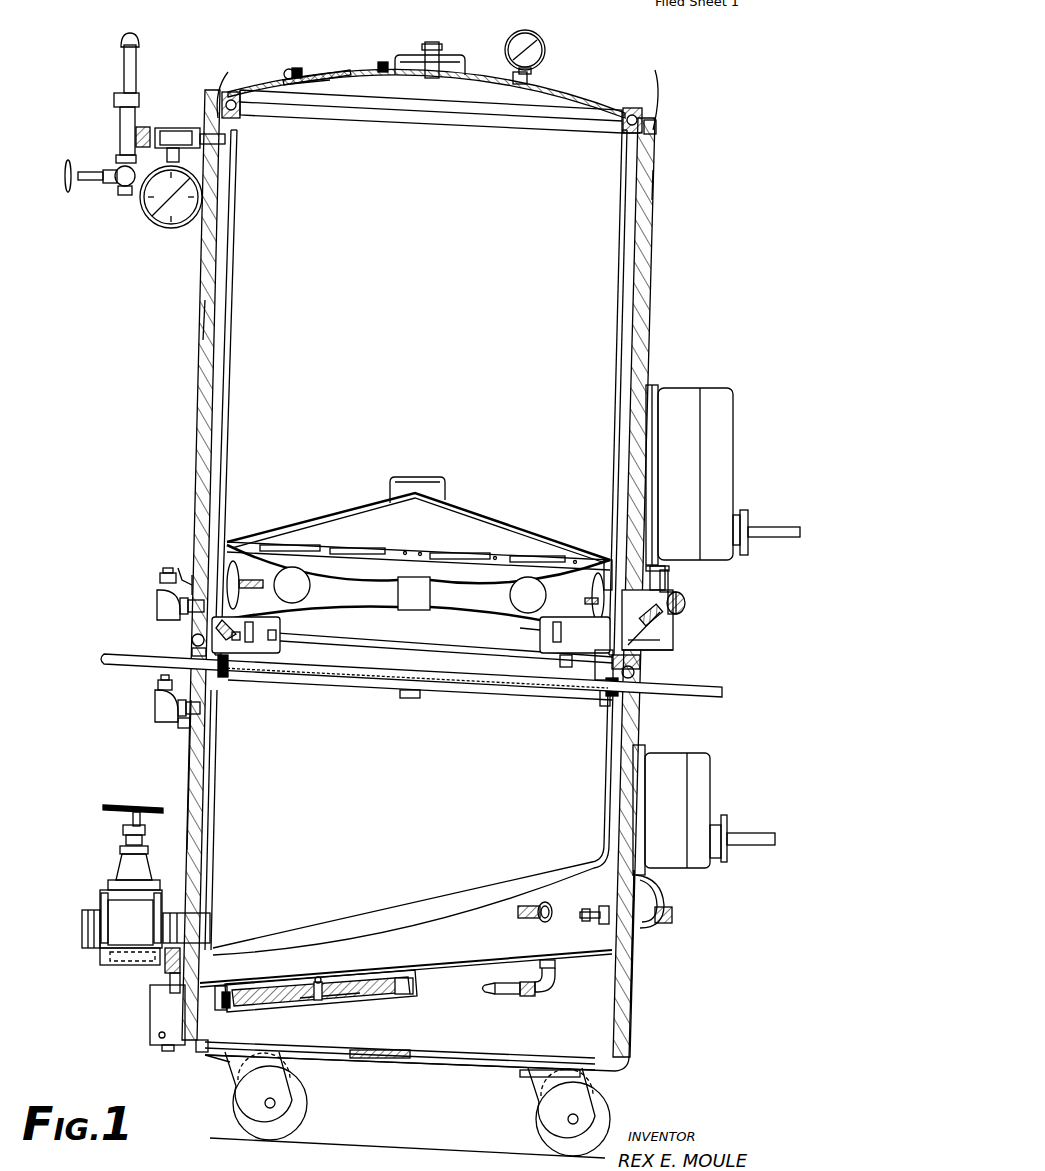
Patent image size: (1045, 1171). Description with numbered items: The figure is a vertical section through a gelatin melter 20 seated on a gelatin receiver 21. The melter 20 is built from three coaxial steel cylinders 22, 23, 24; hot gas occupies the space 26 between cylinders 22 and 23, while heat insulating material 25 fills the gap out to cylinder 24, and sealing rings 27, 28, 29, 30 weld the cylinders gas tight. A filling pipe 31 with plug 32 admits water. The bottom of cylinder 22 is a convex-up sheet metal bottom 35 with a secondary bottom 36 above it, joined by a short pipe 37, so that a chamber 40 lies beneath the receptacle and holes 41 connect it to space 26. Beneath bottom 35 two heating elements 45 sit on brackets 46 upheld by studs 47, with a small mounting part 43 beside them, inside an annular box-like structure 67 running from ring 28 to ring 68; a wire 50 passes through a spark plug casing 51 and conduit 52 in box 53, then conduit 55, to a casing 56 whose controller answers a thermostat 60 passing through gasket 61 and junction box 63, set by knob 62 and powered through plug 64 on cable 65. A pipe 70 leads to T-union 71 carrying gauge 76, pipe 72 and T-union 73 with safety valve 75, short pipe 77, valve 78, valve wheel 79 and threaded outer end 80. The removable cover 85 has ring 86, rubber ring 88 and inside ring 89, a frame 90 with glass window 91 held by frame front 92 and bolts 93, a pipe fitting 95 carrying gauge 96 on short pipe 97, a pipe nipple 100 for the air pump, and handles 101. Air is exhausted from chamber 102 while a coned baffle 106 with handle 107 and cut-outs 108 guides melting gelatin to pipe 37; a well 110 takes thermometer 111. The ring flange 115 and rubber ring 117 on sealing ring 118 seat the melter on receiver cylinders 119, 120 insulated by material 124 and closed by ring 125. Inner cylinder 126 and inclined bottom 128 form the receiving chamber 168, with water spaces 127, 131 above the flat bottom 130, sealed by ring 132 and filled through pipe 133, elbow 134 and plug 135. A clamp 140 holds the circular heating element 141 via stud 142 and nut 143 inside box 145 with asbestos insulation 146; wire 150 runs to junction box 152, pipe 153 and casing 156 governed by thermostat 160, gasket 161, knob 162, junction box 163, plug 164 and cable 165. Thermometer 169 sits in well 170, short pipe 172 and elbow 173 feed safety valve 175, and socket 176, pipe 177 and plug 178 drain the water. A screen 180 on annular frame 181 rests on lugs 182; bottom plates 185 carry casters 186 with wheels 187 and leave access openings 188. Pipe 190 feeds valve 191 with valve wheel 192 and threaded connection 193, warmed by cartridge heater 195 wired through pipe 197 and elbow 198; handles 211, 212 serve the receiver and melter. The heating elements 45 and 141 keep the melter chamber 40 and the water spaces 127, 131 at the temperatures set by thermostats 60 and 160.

The gelatin melter 20 is at (662, 308).
The gelatin receiver 21 is at (642, 975).
The sheet metal cylinder 22 is at (237, 246).
The sheet metal cylinder 23 is at (225, 290).
The sheet metal cylinder 24 is at (197, 418).
The heat insulating material 25 is at (205, 318).
The space for heating fluid 26 is at (225, 450).
The sealing ring 27 is at (625, 136).
The sealing ring 28 is at (596, 672).
The sealing ring 29 is at (657, 128).
The sealing ring 30 is at (640, 662).
The filling pipe 31 is at (165, 604).
The plug 32 is at (165, 572).
The sheet metal bottom 35 is at (480, 598).
The secondary bottom 36 is at (360, 578).
The short pipe 37 is at (398, 592).
The chamber 40 is at (239, 592).
The holes 41 is at (596, 606).
The bracket 43 is at (226, 636).
The electrical heating elements 45 is at (278, 636).
The brackets 46 is at (548, 645).
The studs 47 is at (248, 622).
The wire 50 is at (677, 614).
The spark plug casing 51 is at (647, 620).
The conduit 52 is at (647, 641).
The sheet metal box 53 is at (674, 640).
The conduit 55 is at (668, 582).
The casing 56 is at (735, 455).
The thermostat 60 is at (599, 587).
The gasket 61 is at (611, 558).
The knob 62 is at (686, 602).
The junction box 63 is at (672, 592).
The plug 64 is at (748, 522).
The cable 65 is at (770, 538).
The annular box-like structure 67 is at (305, 636).
The ring 68 is at (525, 629).
The pipe 70 is at (222, 140).
The T-union 71 is at (178, 130).
The pipe 72 is at (146, 128).
The T-union 73 is at (122, 130).
The safety valve 75 is at (124, 62).
The gauge 76 is at (171, 228).
The short pipe 77 is at (118, 160).
The valve 78 is at (116, 184).
The valve wheel 79 is at (67, 190).
The outer end 80 is at (124, 196).
The removable cover 85 is at (592, 97).
The steel ring 86 is at (632, 106).
The rubber ring 88 is at (236, 89).
The inside ring 89 is at (252, 118).
The circular frame 90 is at (368, 82).
The glass window 91 is at (335, 70).
The frame front 92 is at (289, 68).
The bolts 93 is at (298, 66).
The pipe fitting 95 is at (512, 80).
The gauge 96 is at (546, 48).
The short pipe 97 is at (532, 72).
The pipe nipple 100 is at (440, 57).
The handles 101 is at (410, 55).
The chamber 102 is at (419, 325).
The baffle 106 is at (495, 520).
The handle 107 is at (425, 478).
The cut-outs 108 is at (373, 545).
The metal well 110 is at (258, 573).
The thermometer 111 is at (180, 566).
The ring flange 115 is at (192, 640).
The rubber ring 117 is at (636, 672).
The sealing ring 118 is at (636, 692).
The sheet metal cylinder 119 is at (185, 750).
The sheet metal cylinder 120 is at (210, 758).
The heat insulating material 124 is at (188, 800).
The sealing ring 125 is at (636, 1046).
The sheet metal cylinder 126 is at (213, 810).
The space 127 is at (212, 840).
The inclined bottom 128 is at (372, 930).
The metal bottom 130 is at (440, 966).
The space 131 is at (480, 898).
The ring 132 is at (604, 706).
The pipe 133 is at (180, 722).
The elbow 134 is at (158, 708).
The plug 135 is at (158, 686).
The clamp 140 is at (292, 1002).
The heating element 141 is at (388, 972).
The stud 142 is at (318, 980).
The nut 143 is at (330, 1012).
The metal box 145 is at (382, 996).
The asbestos insulation 146 is at (410, 994).
The wire 150 is at (225, 1006).
The junction box 152 is at (150, 1036).
The pipe 153 is at (365, 1060).
The casing 156 is at (710, 758).
The thermostat 160 is at (588, 920).
The gasket 161 is at (600, 914).
The knob 162 is at (673, 915).
The junction box 163 is at (665, 897).
The plug 164 is at (725, 820).
The cable 165 is at (760, 830).
The gelatin receiving chamber 168 is at (387, 797).
The thermometer 169 is at (540, 922).
The well 170 is at (520, 918).
The short pipe 172 is at (556, 966).
The elbow 173 is at (550, 986).
The safety valve 175 is at (497, 996).
The internally threaded socket 176 is at (228, 980).
The pipe 177 is at (203, 1055).
The removable plug 178 is at (204, 1062).
The screen 180 is at (465, 688).
The annular frame 181 is at (232, 672).
The lugs 182 is at (412, 698).
The bottom plates 185 is at (314, 1052).
The swivelling casters 186 is at (292, 1090).
The wheels 187 is at (306, 1116).
The access openings 188 is at (490, 1066).
The pipe 190 is at (212, 915).
The valve 191 is at (115, 912).
The valve wheel 192 is at (122, 805).
The threaded connection 193 is at (82, 930).
The cartridge heater 195 is at (120, 958).
The pipe 197 is at (172, 982).
The elbow 198 is at (167, 965).
The handles 211 is at (102, 662).
The handles 212 is at (215, 80).